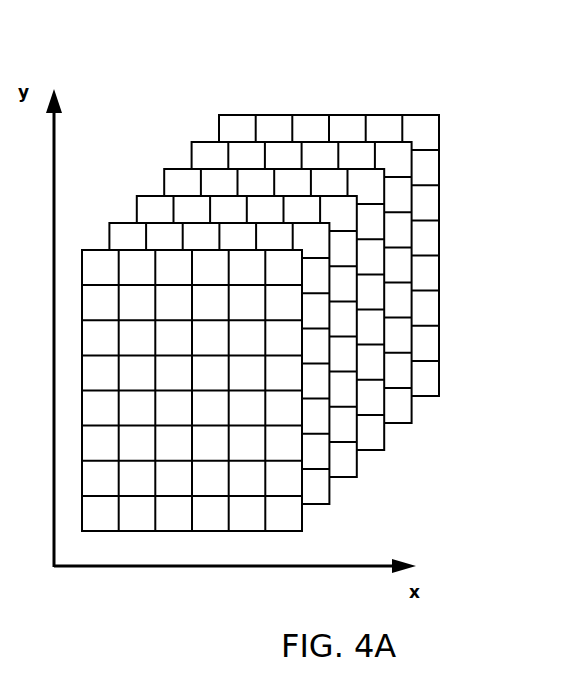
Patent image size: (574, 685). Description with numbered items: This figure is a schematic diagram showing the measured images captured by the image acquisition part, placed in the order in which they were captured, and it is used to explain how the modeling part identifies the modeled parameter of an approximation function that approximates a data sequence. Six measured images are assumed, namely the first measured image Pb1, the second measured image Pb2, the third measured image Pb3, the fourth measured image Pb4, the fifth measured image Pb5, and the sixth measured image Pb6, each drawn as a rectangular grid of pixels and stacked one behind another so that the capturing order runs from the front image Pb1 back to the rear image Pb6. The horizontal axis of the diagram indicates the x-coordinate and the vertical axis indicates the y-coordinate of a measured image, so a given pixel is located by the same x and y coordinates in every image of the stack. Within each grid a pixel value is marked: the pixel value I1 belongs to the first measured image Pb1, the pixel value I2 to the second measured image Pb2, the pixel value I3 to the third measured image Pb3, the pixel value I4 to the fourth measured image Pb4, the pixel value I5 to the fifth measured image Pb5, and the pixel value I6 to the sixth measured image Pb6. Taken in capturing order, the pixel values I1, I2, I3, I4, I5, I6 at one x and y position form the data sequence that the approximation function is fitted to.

The first measured image Pb1 is at (92, 250).
The second measured image Pb2 is at (92, 250).
The third measured image Pb3 is at (239, 311).
The fourth measured image Pb4 is at (266, 284).
The fifth measured image Pb5 is at (294, 257).
The sixth measured image Pb6 is at (321, 230).
The pixel value of first measured image I1 is at (192, 390).
The pixel value of second measured image I2 is at (219, 363).
The pixel value of third measured image I3 is at (247, 336).
The pixel value of fourth measured image I4 is at (274, 309).
The pixel value of fifth measured image I5 is at (302, 282).
The pixel value of sixth measured image I6 is at (329, 255).